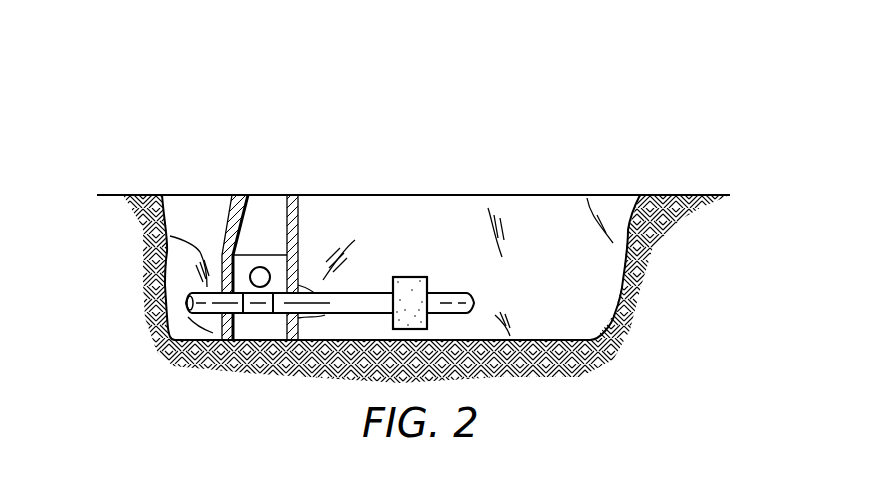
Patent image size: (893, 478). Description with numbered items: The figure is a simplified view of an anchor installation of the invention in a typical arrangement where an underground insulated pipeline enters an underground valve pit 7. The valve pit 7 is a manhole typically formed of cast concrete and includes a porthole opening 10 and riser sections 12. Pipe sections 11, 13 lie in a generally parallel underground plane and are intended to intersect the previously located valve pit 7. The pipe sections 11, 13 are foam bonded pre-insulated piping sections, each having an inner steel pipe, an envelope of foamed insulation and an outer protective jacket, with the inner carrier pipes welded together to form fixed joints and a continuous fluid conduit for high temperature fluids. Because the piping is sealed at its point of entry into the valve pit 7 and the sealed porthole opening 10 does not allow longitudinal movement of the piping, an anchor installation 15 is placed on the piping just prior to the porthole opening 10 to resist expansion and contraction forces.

The valve pit 7 is at (264, 181).
The porthole opening 10 is at (254, 270).
The pipe section 11 is at (452, 293).
The riser section 12 is at (298, 230).
The pipe section 13 is at (358, 293).
The anchor installation 15 is at (410, 277).